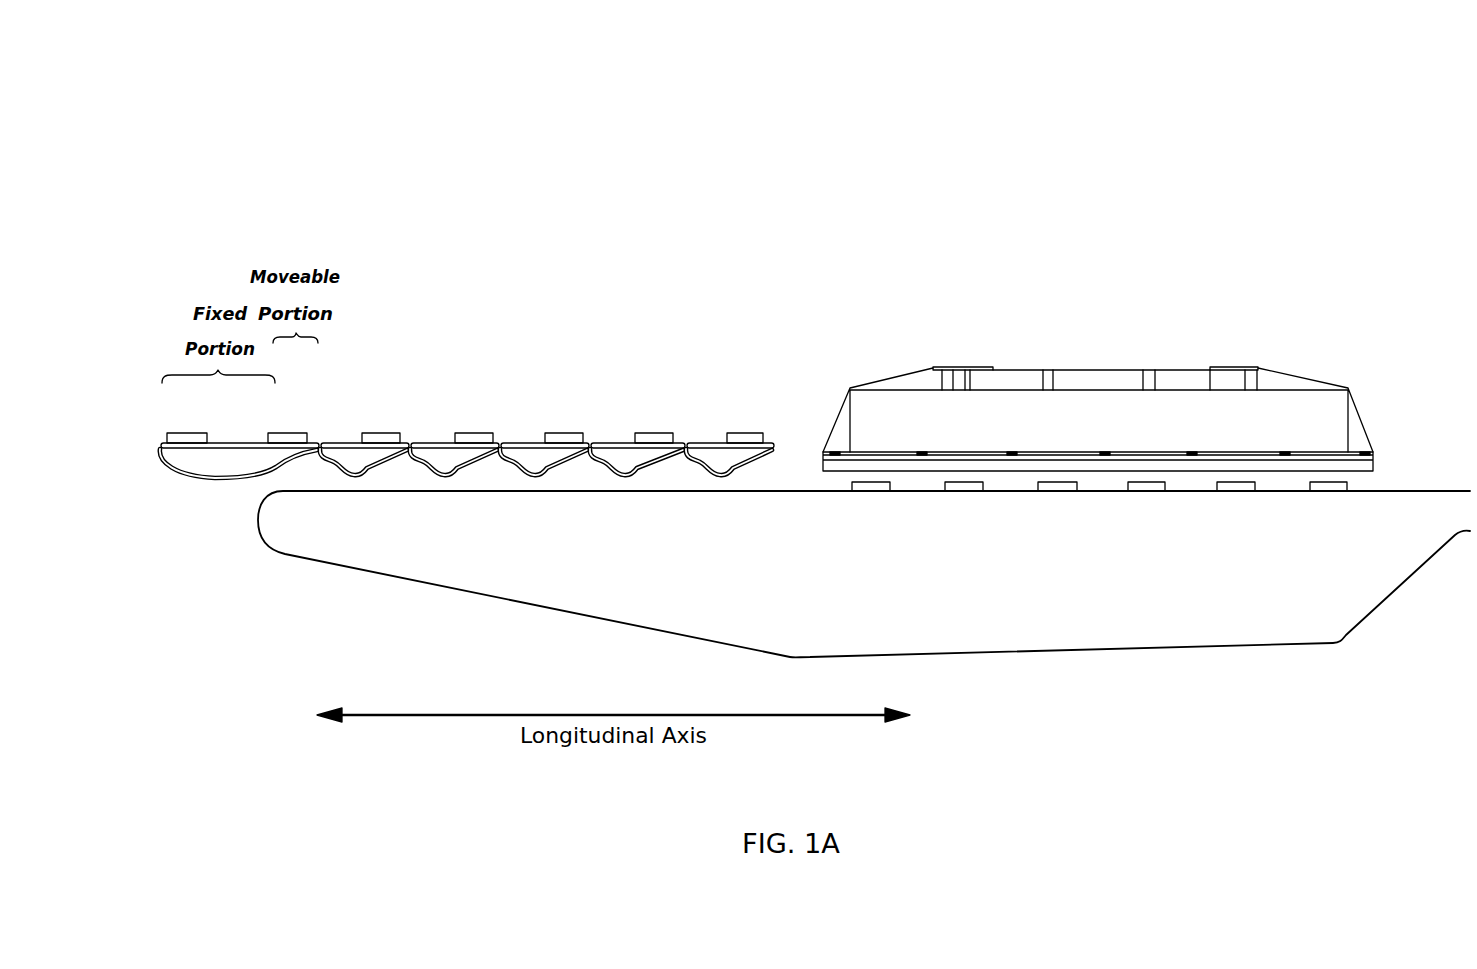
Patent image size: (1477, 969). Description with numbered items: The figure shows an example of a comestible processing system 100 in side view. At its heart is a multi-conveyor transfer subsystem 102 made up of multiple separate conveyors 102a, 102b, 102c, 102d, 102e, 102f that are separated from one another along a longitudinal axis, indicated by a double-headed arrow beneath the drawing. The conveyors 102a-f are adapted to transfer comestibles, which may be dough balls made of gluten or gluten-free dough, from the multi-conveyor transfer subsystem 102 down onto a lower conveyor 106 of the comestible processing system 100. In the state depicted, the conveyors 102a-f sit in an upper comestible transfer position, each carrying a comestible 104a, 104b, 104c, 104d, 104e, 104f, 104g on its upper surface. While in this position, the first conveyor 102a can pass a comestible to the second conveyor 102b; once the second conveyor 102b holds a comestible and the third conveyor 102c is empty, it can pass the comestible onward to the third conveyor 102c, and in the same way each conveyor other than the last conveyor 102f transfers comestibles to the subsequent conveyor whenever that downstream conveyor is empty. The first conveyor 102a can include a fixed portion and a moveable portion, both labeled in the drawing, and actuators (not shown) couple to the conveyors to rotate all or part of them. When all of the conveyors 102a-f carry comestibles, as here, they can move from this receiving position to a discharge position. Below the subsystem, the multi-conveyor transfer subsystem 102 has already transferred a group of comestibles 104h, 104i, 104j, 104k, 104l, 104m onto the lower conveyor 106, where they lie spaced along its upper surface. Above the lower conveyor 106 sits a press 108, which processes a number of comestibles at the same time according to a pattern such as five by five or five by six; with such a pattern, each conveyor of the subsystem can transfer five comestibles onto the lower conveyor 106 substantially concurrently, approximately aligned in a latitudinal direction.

The comestible processing system 100 is at (162, 115).
The multi-conveyor transfer subsystem 102 is at (155, 415).
The first conveyor 102a is at (278, 469).
The second conveyor 102b is at (360, 474).
The third conveyor 102c is at (450, 474).
The conveyor 102d is at (540, 474).
The conveyor 102e is at (630, 474).
The last conveyor 102f is at (726, 474).
The comestible 104a is at (205, 433).
The comestible 104b is at (305, 433).
The comestible 104c is at (398, 433).
The comestible 104d is at (491, 433).
The comestible 104e is at (581, 433).
The comestible 104f is at (671, 433).
The comestible 104g is at (761, 433).
The comestible 104h is at (888, 492).
The comestible 104i is at (981, 492).
The comestible 104j is at (1075, 492).
The comestible 104k is at (1163, 492).
The comestible 104l is at (1253, 492).
The comestible 104m is at (1345, 492).
The lower conveyor 106 is at (788, 658).
The press 108 is at (1258, 368).